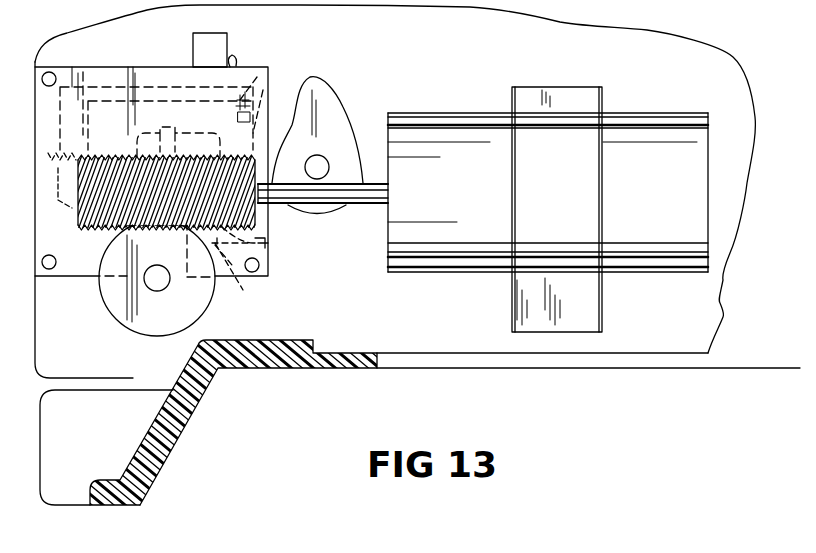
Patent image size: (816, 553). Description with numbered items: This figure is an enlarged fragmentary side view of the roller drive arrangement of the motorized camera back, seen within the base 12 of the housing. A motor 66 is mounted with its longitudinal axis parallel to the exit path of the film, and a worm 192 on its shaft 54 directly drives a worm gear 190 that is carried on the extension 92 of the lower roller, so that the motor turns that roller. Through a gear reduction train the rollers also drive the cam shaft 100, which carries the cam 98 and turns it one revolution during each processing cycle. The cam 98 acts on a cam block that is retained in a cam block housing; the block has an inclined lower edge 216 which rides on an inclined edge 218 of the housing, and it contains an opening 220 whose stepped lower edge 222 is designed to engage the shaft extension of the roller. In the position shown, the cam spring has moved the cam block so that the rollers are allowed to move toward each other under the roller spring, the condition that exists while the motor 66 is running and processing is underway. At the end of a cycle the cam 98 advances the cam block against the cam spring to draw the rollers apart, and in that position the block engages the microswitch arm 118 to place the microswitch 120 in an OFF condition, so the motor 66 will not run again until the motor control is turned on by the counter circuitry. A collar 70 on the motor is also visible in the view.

The base 12 is at (233, 370).
The shaft 54 is at (377, 200).
The motor 66 is at (470, 201).
The collar 70 is at (588, 103).
The extension 92 is at (163, 290).
The cam 98 is at (312, 97).
The cam shaft 100 is at (318, 166).
The microswitch arm 118 is at (236, 60).
The microswitch 120 is at (229, 37).
The worm gear 190 is at (153, 338).
The worm 192 is at (266, 243).
The inclined lower edge 216 is at (178, 235).
The inclined edge 218 is at (233, 277).
The opening 220 is at (160, 127).
The stepped lower edge 222 is at (185, 115).